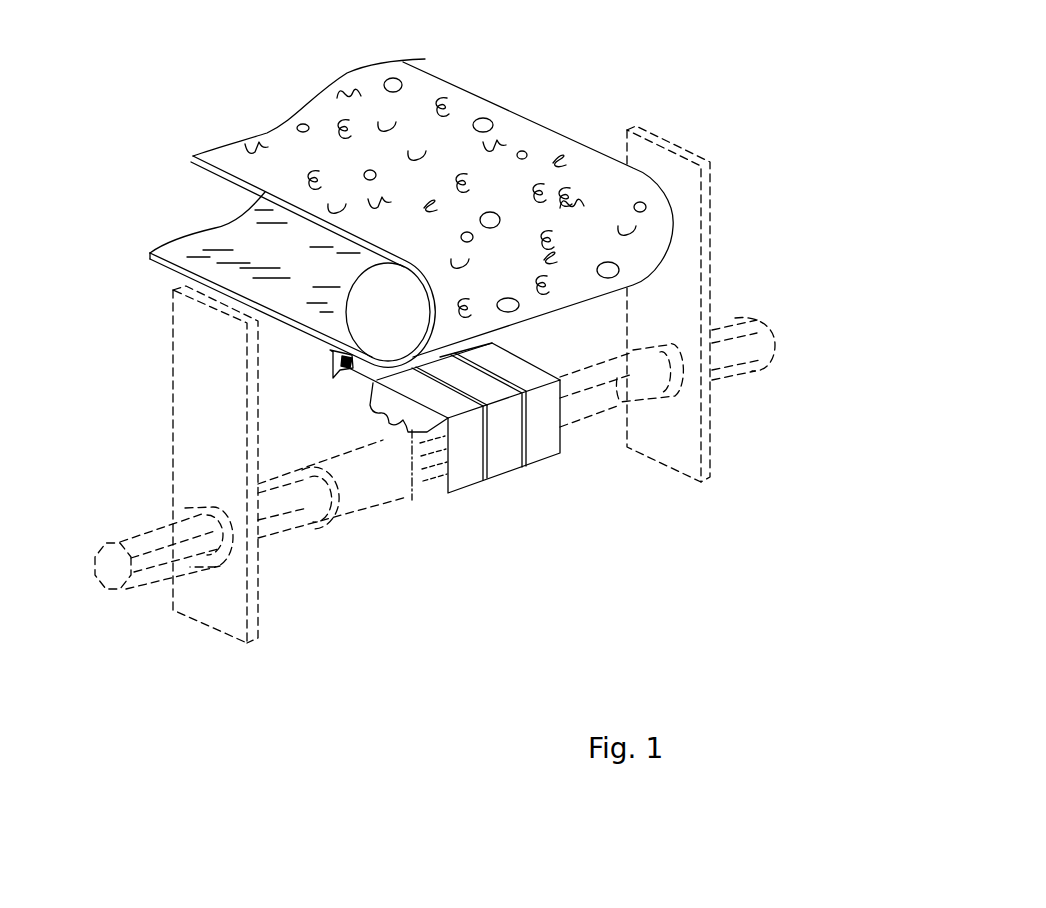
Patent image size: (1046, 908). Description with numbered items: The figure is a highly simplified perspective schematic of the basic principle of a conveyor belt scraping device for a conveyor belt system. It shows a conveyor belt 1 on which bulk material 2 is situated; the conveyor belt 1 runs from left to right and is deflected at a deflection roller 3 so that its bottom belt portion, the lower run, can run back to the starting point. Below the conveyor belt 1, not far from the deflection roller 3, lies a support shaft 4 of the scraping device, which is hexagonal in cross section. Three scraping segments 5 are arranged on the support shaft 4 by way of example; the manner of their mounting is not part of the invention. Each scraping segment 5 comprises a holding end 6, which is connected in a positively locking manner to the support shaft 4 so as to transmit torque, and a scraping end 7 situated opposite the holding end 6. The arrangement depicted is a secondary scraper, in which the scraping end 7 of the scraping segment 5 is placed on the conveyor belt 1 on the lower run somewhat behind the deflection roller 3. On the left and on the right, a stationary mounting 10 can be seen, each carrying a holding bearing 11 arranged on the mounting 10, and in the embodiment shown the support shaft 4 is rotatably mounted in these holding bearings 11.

The conveyor belt 1 is at (453, 90).
The bulk material 2 is at (488, 120).
The deflection roller 3 is at (403, 290).
The support shaft 4 is at (143, 586).
The scraping segments 5 is at (542, 443).
The holding end 6 is at (410, 500).
The scraping end 7 is at (332, 378).
The stationary mounting 10 is at (711, 187).
The holding bearing 11 is at (203, 503).